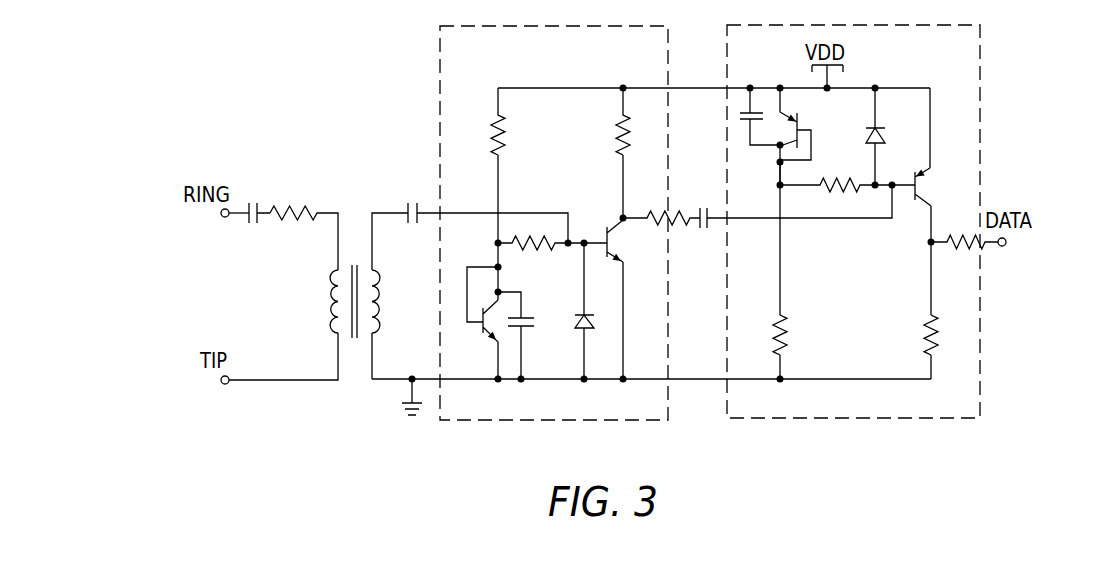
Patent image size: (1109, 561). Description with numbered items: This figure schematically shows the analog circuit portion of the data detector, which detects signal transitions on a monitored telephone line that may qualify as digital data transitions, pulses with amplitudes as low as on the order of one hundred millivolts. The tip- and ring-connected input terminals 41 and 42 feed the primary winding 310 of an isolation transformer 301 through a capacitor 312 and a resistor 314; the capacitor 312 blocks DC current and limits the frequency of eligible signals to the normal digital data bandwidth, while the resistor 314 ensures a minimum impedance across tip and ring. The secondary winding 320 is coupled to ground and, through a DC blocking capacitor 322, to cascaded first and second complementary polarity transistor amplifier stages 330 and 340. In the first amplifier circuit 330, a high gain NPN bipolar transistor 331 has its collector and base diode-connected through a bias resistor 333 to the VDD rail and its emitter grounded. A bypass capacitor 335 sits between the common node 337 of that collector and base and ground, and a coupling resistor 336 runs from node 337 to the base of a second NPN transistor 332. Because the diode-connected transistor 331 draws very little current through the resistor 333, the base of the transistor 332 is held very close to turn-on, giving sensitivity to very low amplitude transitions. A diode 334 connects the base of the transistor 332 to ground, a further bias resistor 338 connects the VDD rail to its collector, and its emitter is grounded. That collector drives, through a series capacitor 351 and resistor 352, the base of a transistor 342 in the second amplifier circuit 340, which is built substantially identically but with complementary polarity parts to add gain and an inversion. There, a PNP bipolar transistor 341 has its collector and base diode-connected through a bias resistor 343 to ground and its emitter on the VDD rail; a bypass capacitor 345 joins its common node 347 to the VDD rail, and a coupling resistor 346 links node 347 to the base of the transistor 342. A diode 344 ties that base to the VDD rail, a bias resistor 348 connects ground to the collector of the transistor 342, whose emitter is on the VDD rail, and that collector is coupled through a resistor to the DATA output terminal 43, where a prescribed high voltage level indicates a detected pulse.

The tip-connected input terminal 41 is at (228, 385).
The ring-connected input terminal 42 is at (228, 218).
The DATA output terminal 43 is at (1005, 247).
The isolation transformer 301 is at (349, 283).
The primary winding 310 is at (331, 303).
The capacitor 312 is at (257, 204).
The resistor 314 is at (298, 210).
The secondary winding 320 is at (380, 303).
The DC blocking capacitor 322 is at (412, 228).
The first transistor amplifier circuit 330 is at (552, 420).
The first high gain NPN bipolar transistor 331 is at (492, 336).
The second NPN transistor 332 is at (620, 246).
The bias resistor 333 is at (504, 135).
The diode 334 is at (575, 327).
The bypass capacitor 335 is at (550, 310).
The coupling resistor 336 is at (533, 252).
The common node 337 is at (497, 266).
The bias resistor 338 is at (616, 137).
The complementary transistor amplifier circuit 340 is at (848, 418).
The first PNP bipolar transistor 341 is at (800, 121).
The second transistor 342 is at (927, 184).
The bias resistor 343 is at (788, 340).
The diode 344 is at (887, 138).
The bypass capacitor 345 is at (740, 120).
The coupling resistor 346 is at (842, 178).
The common node 347 is at (780, 190).
The bias resistor 348 is at (927, 333).
The capacitor 351 is at (703, 229).
The resistor 352 is at (687, 207).